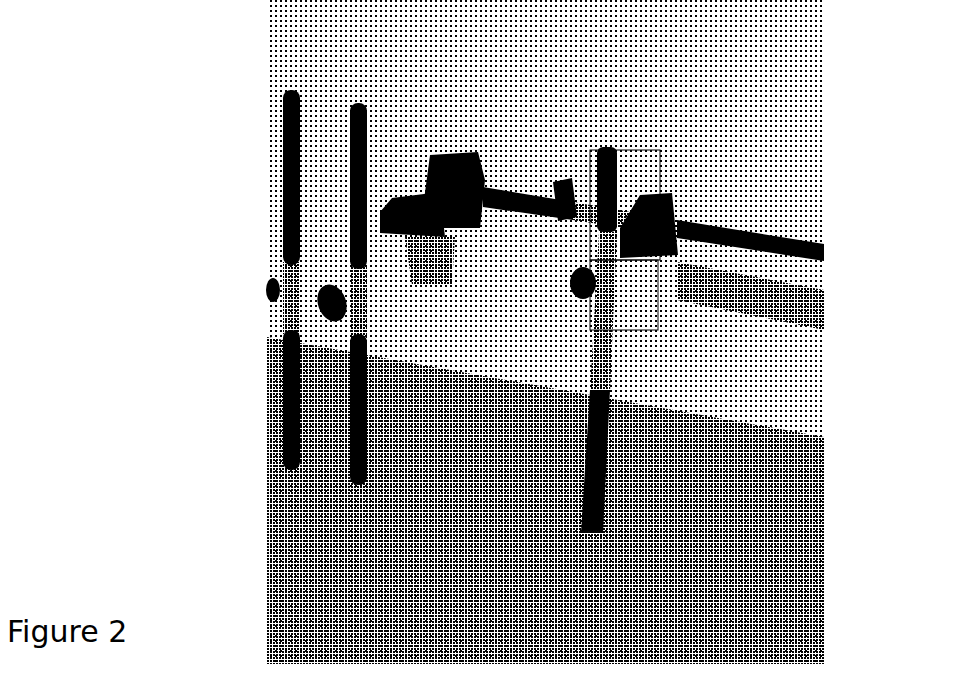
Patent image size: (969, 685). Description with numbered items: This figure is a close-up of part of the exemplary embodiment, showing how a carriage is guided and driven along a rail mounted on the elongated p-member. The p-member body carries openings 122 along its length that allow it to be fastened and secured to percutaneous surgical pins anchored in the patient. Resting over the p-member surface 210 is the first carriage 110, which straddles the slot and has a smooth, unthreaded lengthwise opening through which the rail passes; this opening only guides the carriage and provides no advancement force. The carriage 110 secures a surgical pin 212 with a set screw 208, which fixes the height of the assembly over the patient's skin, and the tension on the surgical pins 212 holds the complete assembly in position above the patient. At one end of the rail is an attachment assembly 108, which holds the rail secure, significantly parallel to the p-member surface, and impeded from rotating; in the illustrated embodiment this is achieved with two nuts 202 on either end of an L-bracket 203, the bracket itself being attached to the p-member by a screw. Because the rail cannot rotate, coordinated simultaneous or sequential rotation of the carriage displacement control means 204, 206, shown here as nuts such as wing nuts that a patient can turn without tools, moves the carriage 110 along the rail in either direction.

The attachment assembly 108 is at (398, 97).
The first carriage 110 is at (677, 137).
The openings 122 is at (277, 226).
The nuts 202 is at (466, 148).
The L-bracket 203 is at (384, 244).
The carriage displacement control means 204 is at (549, 167).
The carriage displacement control means 206 is at (687, 193).
The set screw 208 is at (554, 309).
The p-member surface 210 is at (633, 332).
The surgical pin 212 is at (571, 465).